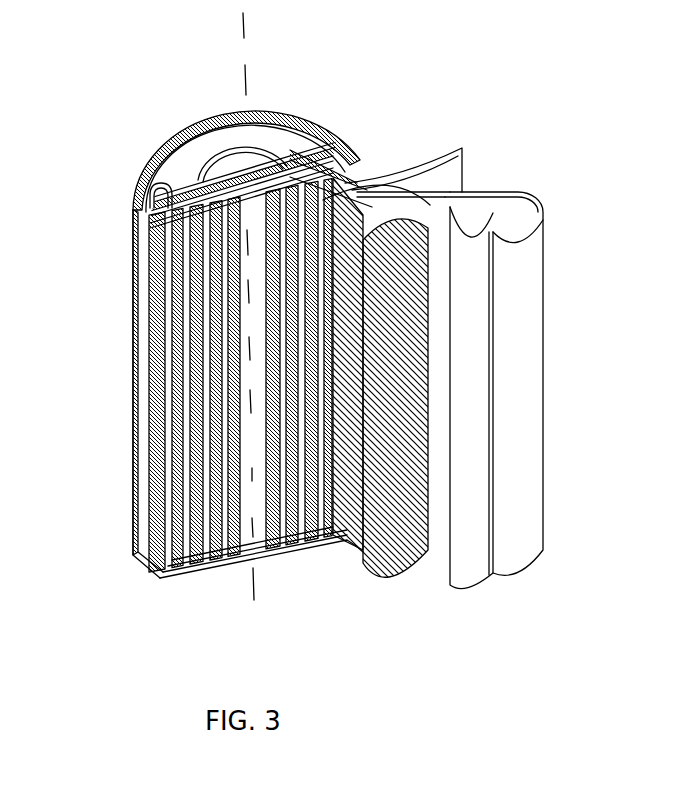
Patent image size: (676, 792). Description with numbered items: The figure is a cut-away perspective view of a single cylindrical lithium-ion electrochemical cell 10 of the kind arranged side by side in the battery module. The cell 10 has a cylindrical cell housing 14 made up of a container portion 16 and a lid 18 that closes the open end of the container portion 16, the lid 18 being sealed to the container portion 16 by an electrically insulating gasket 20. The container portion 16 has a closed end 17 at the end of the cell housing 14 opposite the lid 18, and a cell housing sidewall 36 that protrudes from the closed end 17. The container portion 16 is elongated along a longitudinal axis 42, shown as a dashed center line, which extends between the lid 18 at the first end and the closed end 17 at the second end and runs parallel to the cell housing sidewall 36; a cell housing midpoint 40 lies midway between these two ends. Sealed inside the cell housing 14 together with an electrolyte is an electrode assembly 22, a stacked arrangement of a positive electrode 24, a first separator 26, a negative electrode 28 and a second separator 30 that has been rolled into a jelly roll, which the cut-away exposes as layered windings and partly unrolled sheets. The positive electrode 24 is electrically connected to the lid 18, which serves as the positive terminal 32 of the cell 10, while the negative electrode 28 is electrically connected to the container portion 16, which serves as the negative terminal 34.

The electrochemical cell 10 is at (108, 104).
The cell housing 14 is at (138, 318).
The container portion 16 is at (135, 380).
The closed end 17 is at (190, 578).
The lid 18 is at (300, 122).
The gasket 20 is at (133, 197).
The electrode assembly 22 is at (228, 570).
The positive electrode 24 is at (415, 580).
The first separator 26 is at (475, 577).
The negative electrode 28 is at (545, 550).
The second separator 30 is at (460, 178).
The positive terminal 32 is at (258, 120).
The negative terminal 34 is at (117, 387).
The cell housing sidewall 36 is at (150, 522).
The cell housing midpoint 40 is at (145, 400).
The longitudinal axis 42 is at (245, 25).